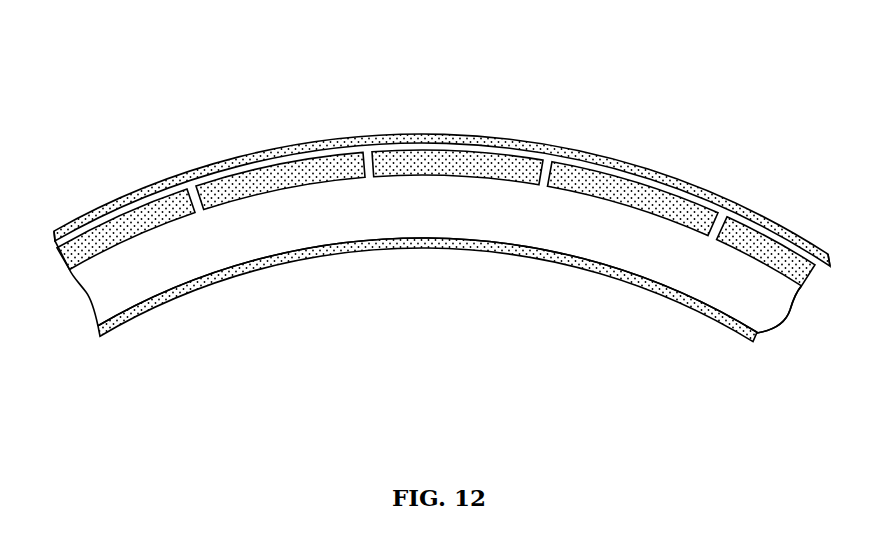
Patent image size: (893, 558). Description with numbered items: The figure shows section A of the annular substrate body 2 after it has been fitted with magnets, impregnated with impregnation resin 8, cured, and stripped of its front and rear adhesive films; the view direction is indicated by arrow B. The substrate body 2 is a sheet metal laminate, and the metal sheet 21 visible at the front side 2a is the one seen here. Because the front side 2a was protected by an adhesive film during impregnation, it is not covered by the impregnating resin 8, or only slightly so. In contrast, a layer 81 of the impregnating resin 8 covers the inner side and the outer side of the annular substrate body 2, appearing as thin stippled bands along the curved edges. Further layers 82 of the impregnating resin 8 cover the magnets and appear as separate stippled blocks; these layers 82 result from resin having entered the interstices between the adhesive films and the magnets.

The substrate body 2 is at (675, 272).
The front side 2a is at (711, 294).
The metal sheet 21 is at (633, 257).
The impregnation resin 8 is at (442, 209).
The layer of impregnating resin 81 is at (297, 148).
The further layers of impregnating resin 82 is at (488, 167).
The section A is at (731, 130).
The view direction B is at (470, 88).